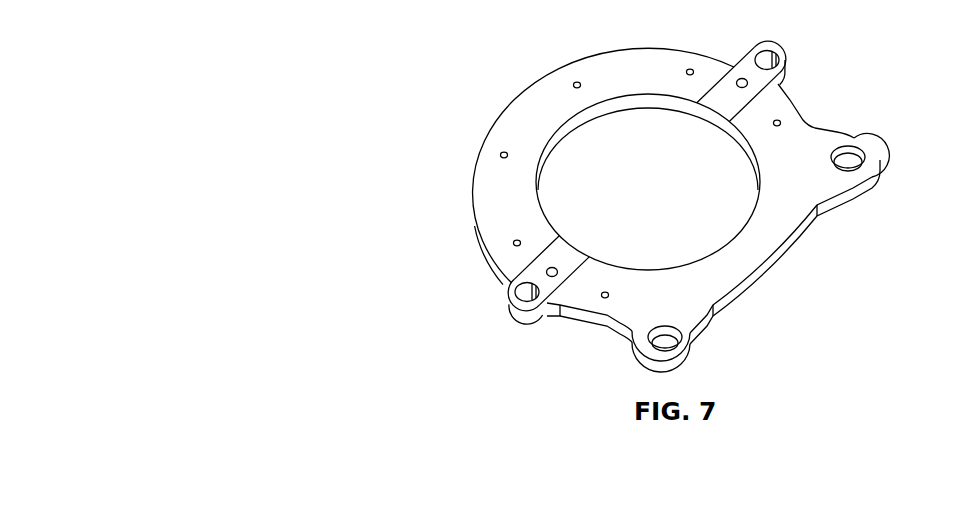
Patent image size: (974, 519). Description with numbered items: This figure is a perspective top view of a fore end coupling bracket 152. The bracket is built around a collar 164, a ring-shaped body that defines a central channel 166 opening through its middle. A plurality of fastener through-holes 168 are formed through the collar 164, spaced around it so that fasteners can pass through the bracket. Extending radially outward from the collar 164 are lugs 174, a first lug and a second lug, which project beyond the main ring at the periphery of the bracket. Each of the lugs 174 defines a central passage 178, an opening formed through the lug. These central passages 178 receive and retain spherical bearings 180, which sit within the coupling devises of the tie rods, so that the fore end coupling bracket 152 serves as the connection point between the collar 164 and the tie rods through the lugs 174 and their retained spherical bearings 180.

The fore end coupling bracket 152 is at (491, 58).
The collar 164 is at (654, 66).
The central channel 166 is at (603, 178).
The fastener through-holes 168 is at (787, 210).
The lugs 174 is at (860, 138).
The central passages 178 is at (660, 345).
The spherical bearings 180 is at (848, 162).